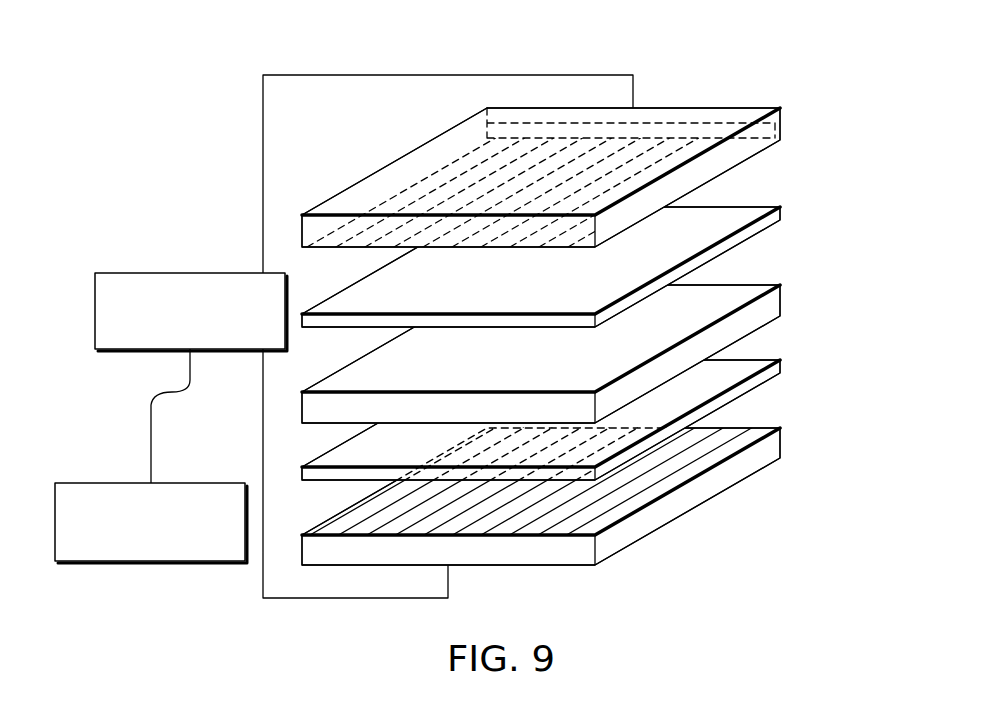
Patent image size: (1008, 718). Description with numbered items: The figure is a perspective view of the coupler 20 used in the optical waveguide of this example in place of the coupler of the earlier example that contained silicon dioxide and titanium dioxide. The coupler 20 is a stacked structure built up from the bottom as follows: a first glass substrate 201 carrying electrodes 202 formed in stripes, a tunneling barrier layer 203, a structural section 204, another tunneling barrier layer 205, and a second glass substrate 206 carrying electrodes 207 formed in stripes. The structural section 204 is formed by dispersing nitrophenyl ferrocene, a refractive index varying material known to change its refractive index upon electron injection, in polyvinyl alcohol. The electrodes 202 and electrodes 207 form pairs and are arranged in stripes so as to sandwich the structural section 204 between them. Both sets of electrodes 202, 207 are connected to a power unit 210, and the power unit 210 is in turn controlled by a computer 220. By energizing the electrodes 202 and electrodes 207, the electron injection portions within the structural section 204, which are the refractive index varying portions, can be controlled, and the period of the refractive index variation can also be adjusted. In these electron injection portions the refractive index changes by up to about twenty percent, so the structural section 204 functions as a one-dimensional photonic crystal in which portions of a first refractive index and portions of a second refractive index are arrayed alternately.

The coupler 20 is at (501, 307).
The first glass substrate 201 is at (683, 498).
The electrodes 202 is at (753, 432).
The tunneling barrier layer 203 is at (775, 365).
The structural section 204 is at (772, 300).
The tunneling barrier layer 205 is at (772, 213).
The second glass substrate 206 is at (780, 121).
The electrodes 207 is at (717, 157).
The power unit 210 is at (168, 273).
The computer 220 is at (100, 483).